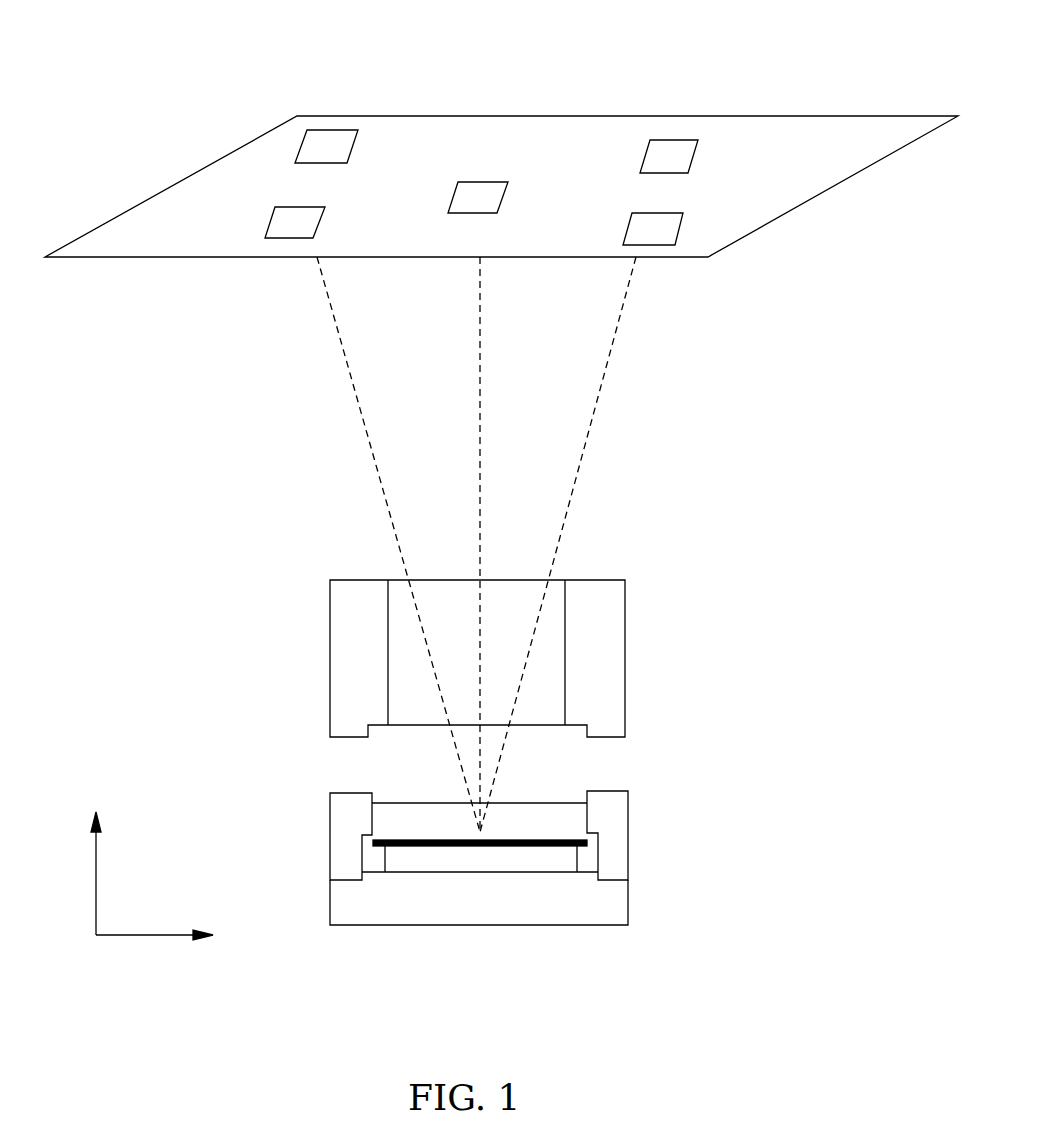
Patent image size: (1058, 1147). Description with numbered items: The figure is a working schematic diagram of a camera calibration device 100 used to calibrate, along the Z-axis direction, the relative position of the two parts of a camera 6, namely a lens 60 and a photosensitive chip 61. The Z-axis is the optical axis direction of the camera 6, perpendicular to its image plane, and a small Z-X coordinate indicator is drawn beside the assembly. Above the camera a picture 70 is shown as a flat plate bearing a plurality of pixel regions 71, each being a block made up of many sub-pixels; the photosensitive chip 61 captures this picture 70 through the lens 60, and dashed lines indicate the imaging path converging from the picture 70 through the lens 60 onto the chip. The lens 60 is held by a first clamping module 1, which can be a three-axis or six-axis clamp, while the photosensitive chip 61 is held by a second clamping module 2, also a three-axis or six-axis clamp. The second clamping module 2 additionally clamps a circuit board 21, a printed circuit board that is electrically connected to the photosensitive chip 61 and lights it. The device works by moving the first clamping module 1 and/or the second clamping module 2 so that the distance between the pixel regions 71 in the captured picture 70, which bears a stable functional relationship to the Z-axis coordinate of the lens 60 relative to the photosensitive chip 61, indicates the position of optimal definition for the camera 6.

The camera calibration device 100 is at (496, 33).
The picture 70 is at (730, 225).
The pixel regions 71 is at (683, 153).
The first clamping module 1 is at (478, 658).
The lens 60 is at (400, 655).
The second clamping module 2 is at (479, 835).
The photosensitive chip 61 is at (403, 862).
The circuit board 21 is at (602, 910).
The camera 6 is at (479, 970).